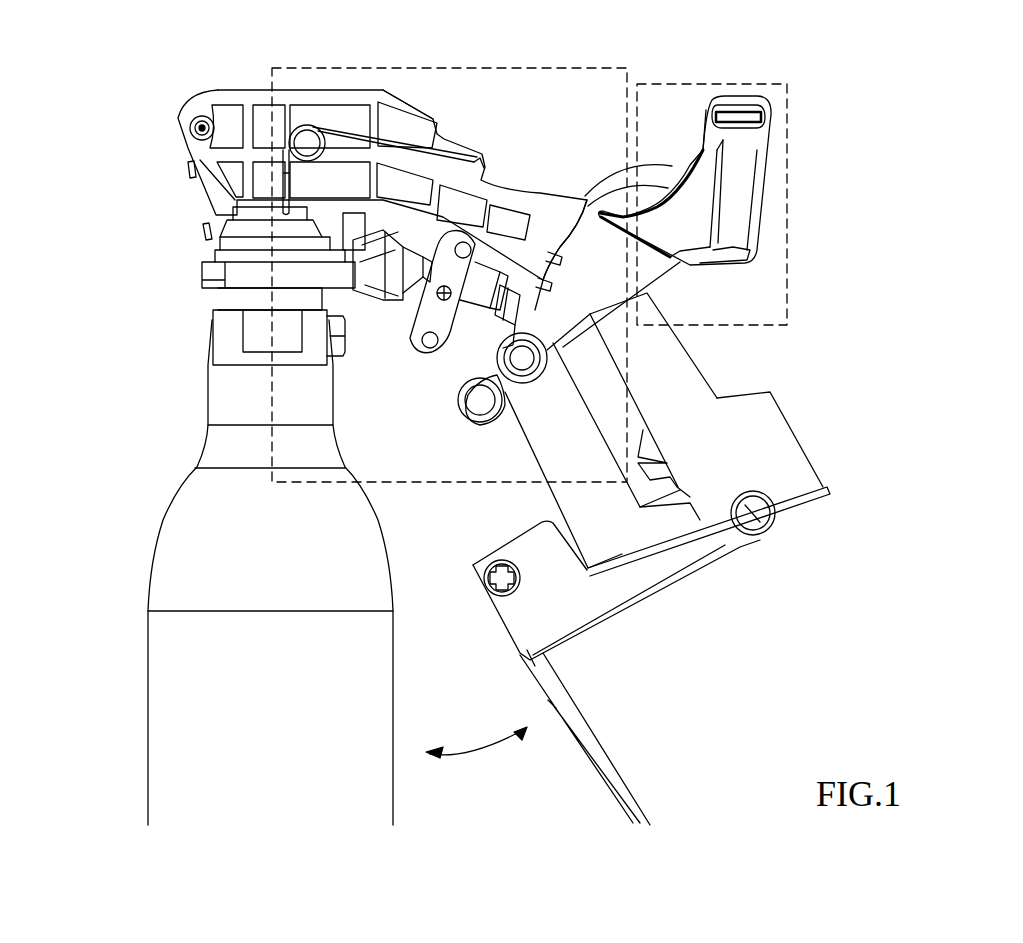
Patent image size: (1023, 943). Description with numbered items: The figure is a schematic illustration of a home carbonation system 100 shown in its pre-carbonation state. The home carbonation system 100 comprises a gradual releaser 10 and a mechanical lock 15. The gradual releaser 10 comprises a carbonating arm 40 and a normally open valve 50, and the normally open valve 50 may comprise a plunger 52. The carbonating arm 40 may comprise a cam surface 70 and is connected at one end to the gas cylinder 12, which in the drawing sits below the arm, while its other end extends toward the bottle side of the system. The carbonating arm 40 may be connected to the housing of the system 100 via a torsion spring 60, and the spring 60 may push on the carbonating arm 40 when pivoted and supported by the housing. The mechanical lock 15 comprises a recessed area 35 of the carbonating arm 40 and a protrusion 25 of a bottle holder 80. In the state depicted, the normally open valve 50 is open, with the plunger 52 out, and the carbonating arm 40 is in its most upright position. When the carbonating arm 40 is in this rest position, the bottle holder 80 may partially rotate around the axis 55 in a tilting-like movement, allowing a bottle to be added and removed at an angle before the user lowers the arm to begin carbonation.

The home carbonation system 100 is at (873, 261).
The gradual releaser 10 is at (536, 63).
The gas cylinder 12 is at (162, 522).
The mechanical lock 15 is at (719, 78).
The protrusion 25 is at (650, 314).
The recessed area 35 is at (730, 263).
The carbonating arm 40 is at (485, 172).
The normally open valve 50 is at (467, 335).
The plunger 52 is at (513, 315).
The axis 55 is at (768, 530).
The torsion spring 60 is at (290, 128).
The cam surface 70 is at (566, 247).
The bottle holder 80 is at (790, 453).